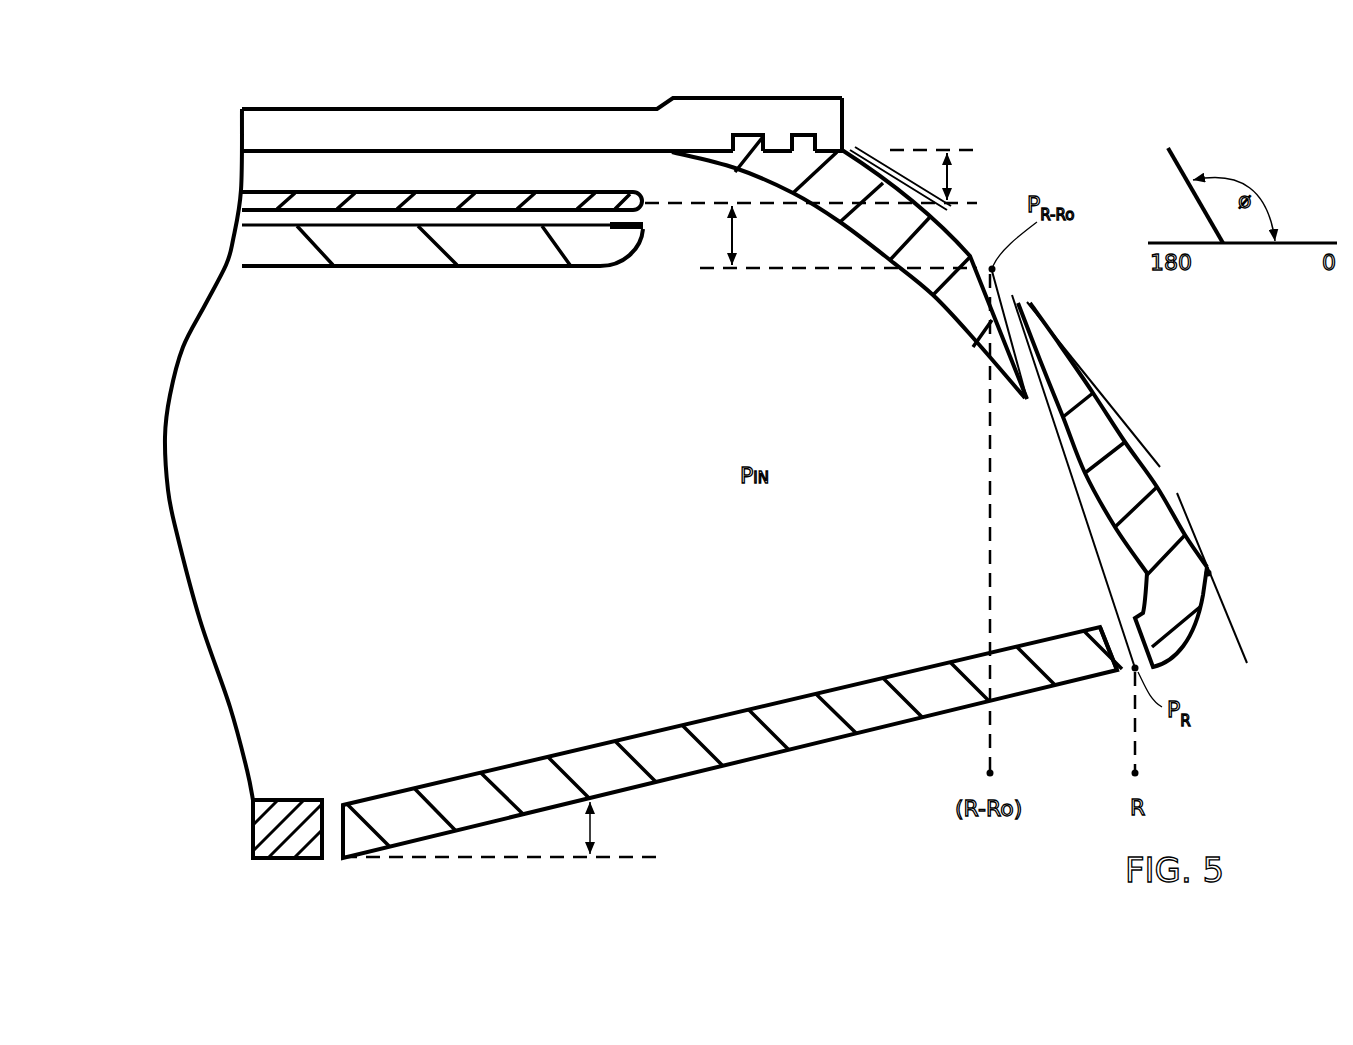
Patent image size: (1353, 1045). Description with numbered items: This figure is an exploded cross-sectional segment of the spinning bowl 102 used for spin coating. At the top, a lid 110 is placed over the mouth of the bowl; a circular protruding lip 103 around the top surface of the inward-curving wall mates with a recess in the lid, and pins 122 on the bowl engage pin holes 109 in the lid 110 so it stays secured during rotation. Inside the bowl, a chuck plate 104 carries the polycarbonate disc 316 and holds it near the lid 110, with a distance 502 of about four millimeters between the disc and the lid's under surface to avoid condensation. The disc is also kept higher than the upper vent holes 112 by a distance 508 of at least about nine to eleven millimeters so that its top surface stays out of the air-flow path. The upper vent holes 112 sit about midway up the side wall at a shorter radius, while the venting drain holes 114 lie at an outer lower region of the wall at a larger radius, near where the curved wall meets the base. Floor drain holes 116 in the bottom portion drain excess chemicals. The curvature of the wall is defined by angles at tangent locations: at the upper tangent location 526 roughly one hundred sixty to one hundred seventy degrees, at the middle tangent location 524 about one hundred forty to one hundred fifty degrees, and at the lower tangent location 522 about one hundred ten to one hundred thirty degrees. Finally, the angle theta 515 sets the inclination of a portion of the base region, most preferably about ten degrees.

The lid 110 is at (541, 140).
The circular protruding lip 103 is at (750, 140).
The pin holes 109 is at (803, 148).
The pins 122 is at (807, 148).
The tangent location 526 is at (871, 163).
The distance 502 is at (955, 175).
The polycarbonate disc 316 is at (585, 189).
The distance 508 is at (740, 232).
The chuck plate 104 is at (543, 238).
The upper vent holes 112 is at (1016, 292).
The tangent location 524 is at (1100, 390).
The tangent location 522 is at (1210, 571).
The floor drain holes 116 is at (331, 796).
The angle theta 515 is at (500, 829).
The spinning bowl 102 is at (886, 724).
The venting drain holes 114 is at (1123, 683).